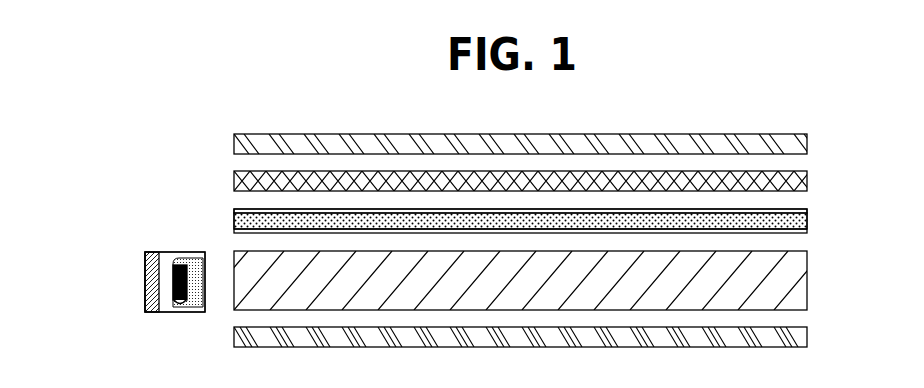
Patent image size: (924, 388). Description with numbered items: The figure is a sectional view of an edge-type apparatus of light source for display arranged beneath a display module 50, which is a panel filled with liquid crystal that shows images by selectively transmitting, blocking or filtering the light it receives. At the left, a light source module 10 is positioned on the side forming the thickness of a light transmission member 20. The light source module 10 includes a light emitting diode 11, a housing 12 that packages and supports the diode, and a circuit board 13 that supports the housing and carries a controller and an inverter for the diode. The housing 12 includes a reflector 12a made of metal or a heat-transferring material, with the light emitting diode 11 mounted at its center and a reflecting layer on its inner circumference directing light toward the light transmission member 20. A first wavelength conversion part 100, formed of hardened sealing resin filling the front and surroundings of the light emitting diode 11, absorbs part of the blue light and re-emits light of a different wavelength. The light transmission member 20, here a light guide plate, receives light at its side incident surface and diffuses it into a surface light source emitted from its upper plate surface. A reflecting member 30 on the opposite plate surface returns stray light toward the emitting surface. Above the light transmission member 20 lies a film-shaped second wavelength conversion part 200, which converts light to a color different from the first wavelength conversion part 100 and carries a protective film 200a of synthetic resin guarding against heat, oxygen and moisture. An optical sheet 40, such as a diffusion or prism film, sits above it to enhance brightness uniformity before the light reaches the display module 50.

The light source module 10 is at (82, 227).
The light emitting diode 11 is at (176, 283).
The housing 12 is at (167, 273).
The reflector 12a is at (178, 303).
The circuit board 13 is at (152, 258).
The first wavelength conversion part 100 is at (194, 259).
The light transmission member 20 is at (803, 281).
The reflecting member 30 is at (803, 338).
The optical sheet 40 is at (807, 183).
The display module 50 is at (807, 146).
The second wavelength conversion part 200 is at (807, 228).
The protective film 200a is at (807, 209).